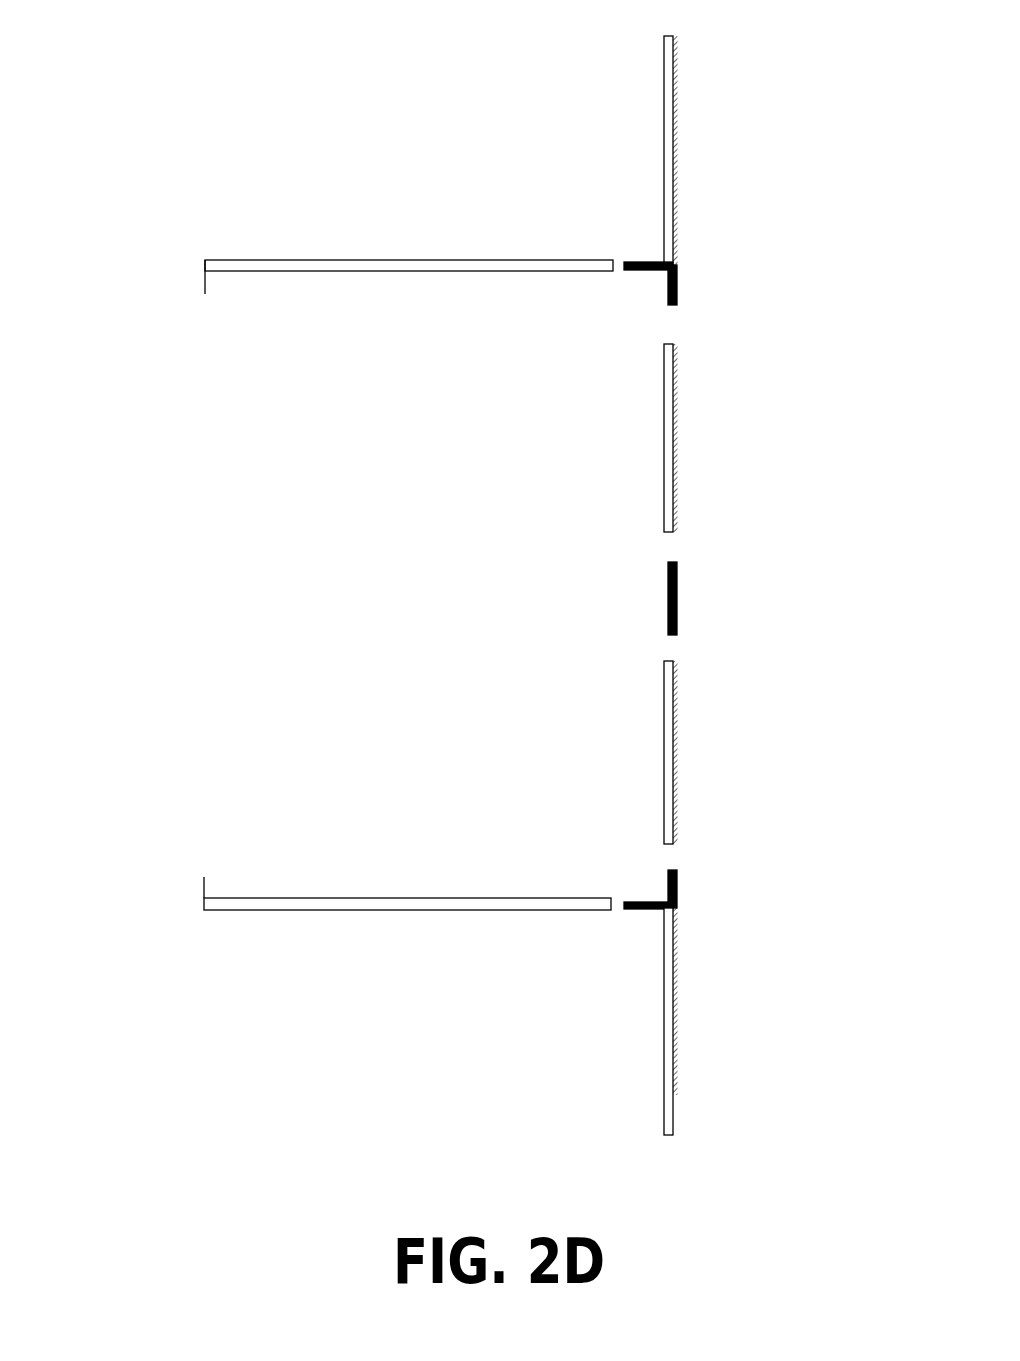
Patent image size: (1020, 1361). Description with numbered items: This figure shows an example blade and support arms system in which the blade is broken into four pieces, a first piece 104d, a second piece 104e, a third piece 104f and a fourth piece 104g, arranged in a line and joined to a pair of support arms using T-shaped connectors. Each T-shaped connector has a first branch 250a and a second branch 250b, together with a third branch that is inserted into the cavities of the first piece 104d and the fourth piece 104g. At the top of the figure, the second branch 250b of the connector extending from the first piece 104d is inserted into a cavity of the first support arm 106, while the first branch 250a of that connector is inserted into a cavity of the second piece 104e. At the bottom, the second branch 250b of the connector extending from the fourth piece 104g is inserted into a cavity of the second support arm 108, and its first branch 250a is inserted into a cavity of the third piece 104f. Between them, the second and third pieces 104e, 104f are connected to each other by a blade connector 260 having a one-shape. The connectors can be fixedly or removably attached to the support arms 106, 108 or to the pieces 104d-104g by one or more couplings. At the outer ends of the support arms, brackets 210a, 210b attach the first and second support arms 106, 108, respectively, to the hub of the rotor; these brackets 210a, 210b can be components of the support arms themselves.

The first piece 104d is at (675, 101).
The second piece 104e is at (674, 434).
The third piece 104f is at (674, 759).
The fourth piece 104g is at (677, 988).
The first support arm 106 is at (336, 259).
The second support arm 108 is at (360, 911).
The bracket 210a is at (204, 285).
The bracket 210b is at (204, 888).
The first branch 250a is at (677, 285).
The second branch 250b is at (648, 262).
The blade connector 260 is at (677, 597).